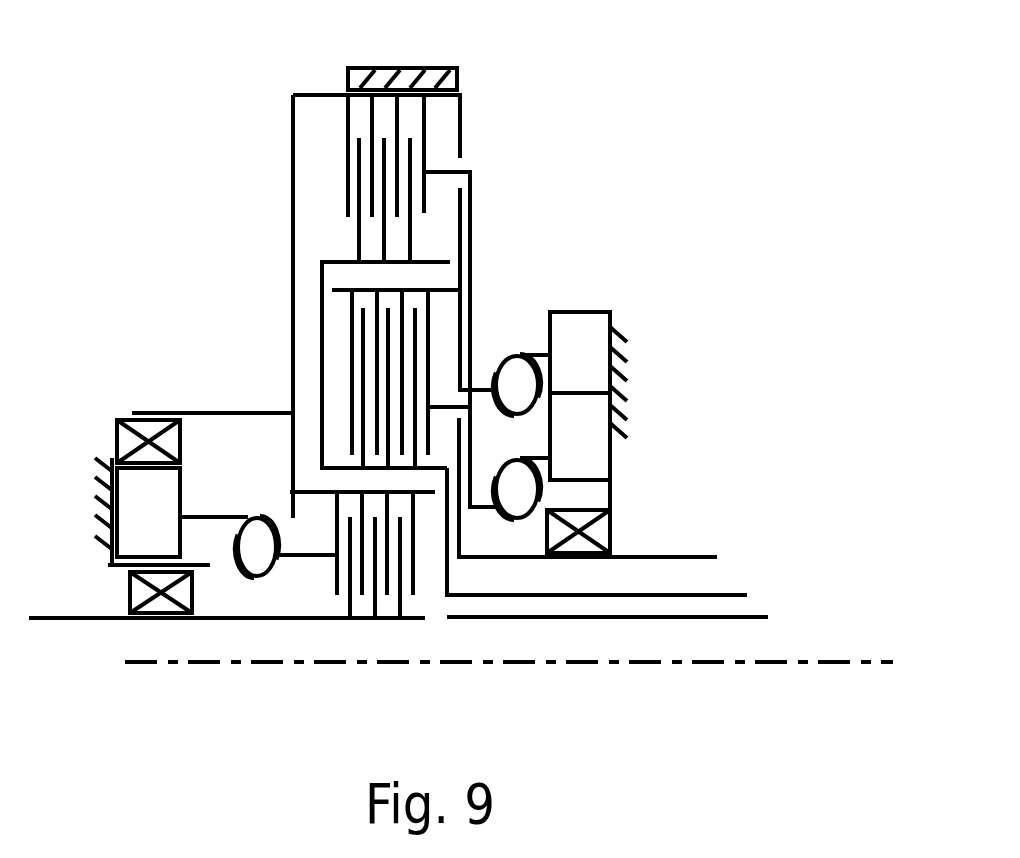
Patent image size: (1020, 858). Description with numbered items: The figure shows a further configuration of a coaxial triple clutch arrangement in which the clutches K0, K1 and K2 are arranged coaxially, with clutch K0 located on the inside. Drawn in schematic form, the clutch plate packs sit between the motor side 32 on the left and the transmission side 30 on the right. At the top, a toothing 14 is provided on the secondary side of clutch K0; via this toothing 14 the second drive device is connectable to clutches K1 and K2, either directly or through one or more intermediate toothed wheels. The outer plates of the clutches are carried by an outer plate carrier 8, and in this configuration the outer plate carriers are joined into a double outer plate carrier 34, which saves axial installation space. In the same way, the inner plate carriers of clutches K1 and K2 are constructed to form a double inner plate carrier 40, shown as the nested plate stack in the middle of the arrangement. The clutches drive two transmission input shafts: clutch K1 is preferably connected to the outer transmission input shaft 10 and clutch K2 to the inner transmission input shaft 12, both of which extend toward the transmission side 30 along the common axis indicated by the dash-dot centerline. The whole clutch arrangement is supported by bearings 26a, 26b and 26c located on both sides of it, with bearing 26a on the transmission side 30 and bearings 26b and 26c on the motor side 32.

The outer plate carrier 8 is at (470, 268).
The outer transmission input shaft 10 is at (668, 598).
The inner transmission input shaft 12 is at (588, 620).
The toothing 14 is at (390, 67).
The bearing 26a is at (600, 530).
The bearing 26b is at (153, 432).
The bearing 26c is at (160, 600).
The transmission side 30 is at (722, 321).
The motor side 32 is at (203, 266).
The double outer plate carrier 34 is at (291, 142).
The double inner plate carrier 40 is at (321, 356).